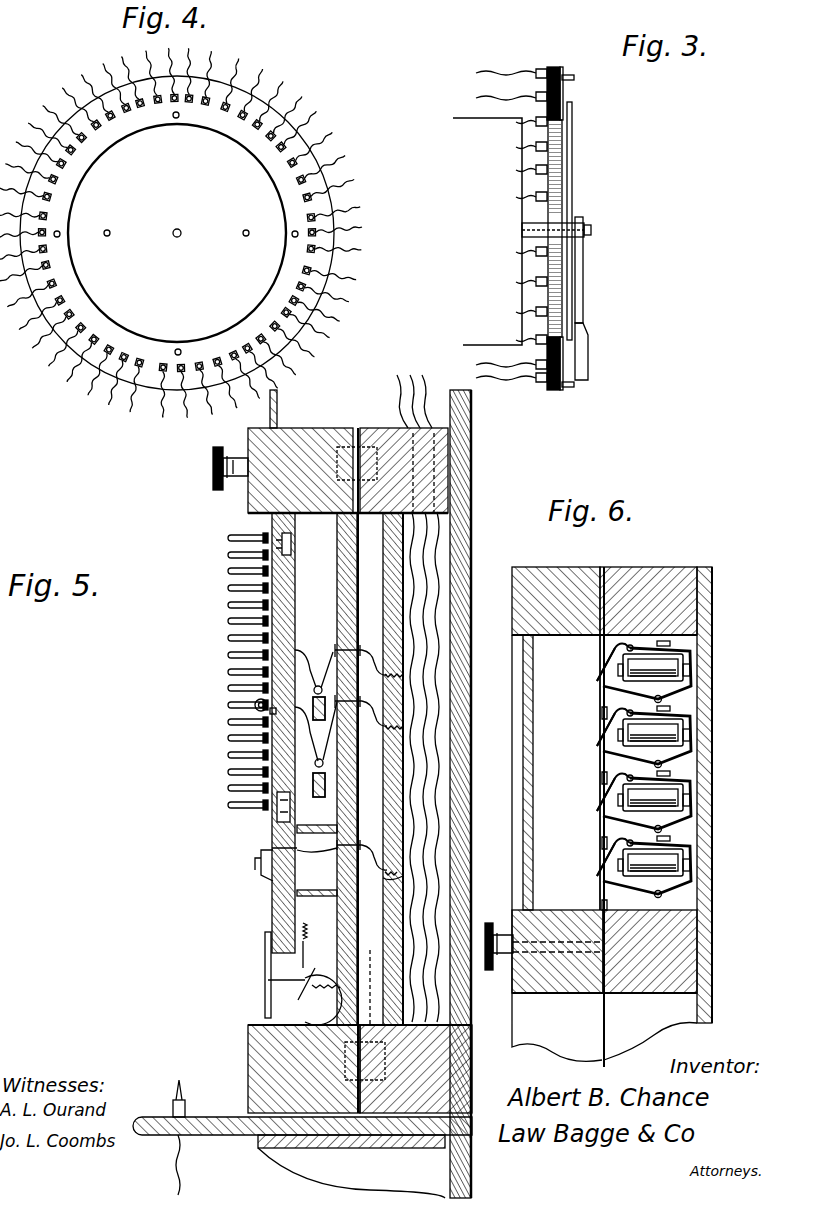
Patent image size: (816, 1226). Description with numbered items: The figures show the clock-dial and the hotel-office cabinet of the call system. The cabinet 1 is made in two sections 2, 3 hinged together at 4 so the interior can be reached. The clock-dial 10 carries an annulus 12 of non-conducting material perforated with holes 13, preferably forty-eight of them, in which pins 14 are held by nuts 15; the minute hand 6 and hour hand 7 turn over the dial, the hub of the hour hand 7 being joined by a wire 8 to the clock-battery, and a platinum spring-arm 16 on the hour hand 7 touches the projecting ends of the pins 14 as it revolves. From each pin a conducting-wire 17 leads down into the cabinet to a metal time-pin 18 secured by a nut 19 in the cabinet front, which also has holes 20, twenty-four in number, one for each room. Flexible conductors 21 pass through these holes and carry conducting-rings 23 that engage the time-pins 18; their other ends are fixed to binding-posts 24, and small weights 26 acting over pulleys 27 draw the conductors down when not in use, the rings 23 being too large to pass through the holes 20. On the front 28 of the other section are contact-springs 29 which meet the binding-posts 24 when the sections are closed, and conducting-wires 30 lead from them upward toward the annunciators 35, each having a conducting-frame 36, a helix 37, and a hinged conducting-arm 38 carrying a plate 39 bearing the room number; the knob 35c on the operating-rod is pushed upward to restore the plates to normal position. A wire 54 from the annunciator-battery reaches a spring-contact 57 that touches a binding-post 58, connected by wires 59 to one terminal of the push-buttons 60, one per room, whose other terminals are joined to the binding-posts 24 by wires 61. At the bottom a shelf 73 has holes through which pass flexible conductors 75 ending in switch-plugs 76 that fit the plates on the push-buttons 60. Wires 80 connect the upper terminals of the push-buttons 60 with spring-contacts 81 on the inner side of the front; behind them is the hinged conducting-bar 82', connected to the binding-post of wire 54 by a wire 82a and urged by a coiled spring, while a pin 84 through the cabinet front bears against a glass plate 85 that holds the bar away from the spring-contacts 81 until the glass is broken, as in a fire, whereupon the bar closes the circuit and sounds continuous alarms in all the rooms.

In FIG. 5, the cabinet 1 is at (337, 769).
In FIG. 6, the cabinet 1 is at (542, 814).
In FIG. 5, the front section of cabinet 2 is at (484, 842).
In FIG. 6, the front section of cabinet 2 is at (615, 970).
In FIG. 5, the back section of cabinet 3 is at (435, 466).
In FIG. 5, the hinge 4 is at (360, 428).
In FIG. 3, the minute hand 6 is at (573, 183).
In FIG. 3, the hour hand 7 is at (584, 273).
In FIG. 3, the wire 8 is at (522, 231).
In FIG. 4, the clock-dial 10 is at (177, 233).
In FIG. 3, the clock-dial 10 is at (565, 150).
In FIG. 5, the clock-dial 10 is at (291, 543).
In FIG. 4, the annulus 12 is at (86, 155).
In FIG. 3, the annulus 12 is at (563, 98).
In FIG. 3, the holes 13 is at (545, 217).
In FIG. 4, the pins 14 is at (318, 231).
In FIG. 3, the pins 14 is at (574, 80).
In FIG. 4, the nuts 15 is at (313, 248).
In FIG. 3, the nuts 15 is at (541, 80).
In FIG. 3, the platinum spring-arm 16 is at (586, 352).
In FIG. 4, the conducting-wire 17 is at (335, 309).
In FIG. 3, the conducting-wire 17 is at (498, 73).
In FIG. 5, the time-pin 18 is at (228, 568).
In FIG. 5, the nuts 19 is at (290, 808).
In FIG. 5, the holes 20 is at (228, 653).
In FIG. 5, the flexible conductors 21 is at (270, 752).
In FIG. 5, the conducting-rings 23 is at (270, 712).
In FIG. 5, the binding-posts 24 is at (338, 640).
In FIG. 5, the weights 26 is at (270, 738).
In FIG. 5, the pulleys 27 is at (488, 733).
In FIG. 5, the front of back section 28 is at (393, 597).
In FIG. 5, the contact-springs 29 is at (372, 648).
In FIG. 5, the conducting-wires 30 is at (430, 680).
In FIG. 6, the annunciators 35 is at (600, 718).
In FIG. 5, the knob 35c is at (215, 489).
In FIG. 6, the knob 35c is at (505, 930).
In FIG. 6, the conducting-frame 36 is at (662, 698).
In FIG. 6, the helix 37 is at (644, 767).
In FIG. 6, the hinged conducting-arm 38 is at (616, 801).
In FIG. 6, the plate 39 is at (600, 670).
In FIG. 5, the wire 54 is at (410, 884).
In FIG. 5, the spring-contact 57 is at (380, 862).
In FIG. 5, the binding-post 58 is at (356, 843).
In FIG. 5, the wires 59 is at (304, 869).
In FIG. 5, the push-buttons 60 is at (258, 866).
In FIG. 5, the wires 61 is at (324, 766).
In FIG. 5, the shelf 73 is at (302, 1147).
In FIG. 5, the flexible conductors 75 is at (175, 1142).
In FIG. 5, the switch-plugs 76 is at (192, 1098).
In FIG. 5, the wires 80 is at (318, 943).
In FIG. 5, the spring-contacts 81 is at (266, 968).
In FIG. 5, the hinged conducting-bar 82' is at (204, 1036).
In FIG. 5, the wire 82a is at (372, 958).
In FIG. 5, the pin 84 is at (264, 984).
In FIG. 5, the glass plate 85 is at (262, 998).